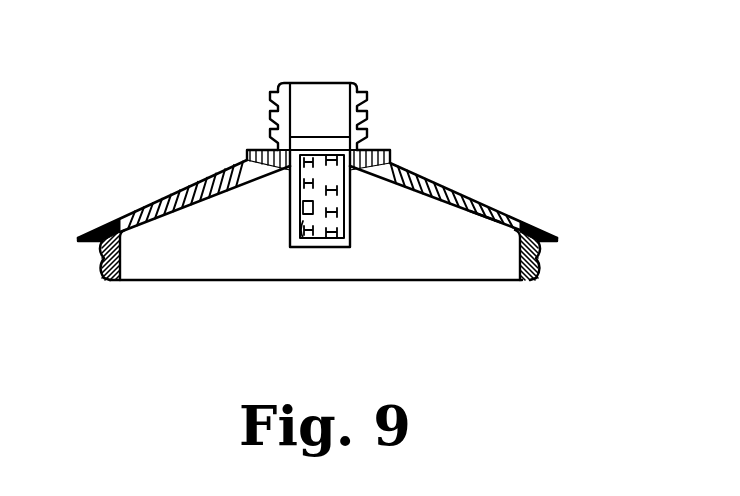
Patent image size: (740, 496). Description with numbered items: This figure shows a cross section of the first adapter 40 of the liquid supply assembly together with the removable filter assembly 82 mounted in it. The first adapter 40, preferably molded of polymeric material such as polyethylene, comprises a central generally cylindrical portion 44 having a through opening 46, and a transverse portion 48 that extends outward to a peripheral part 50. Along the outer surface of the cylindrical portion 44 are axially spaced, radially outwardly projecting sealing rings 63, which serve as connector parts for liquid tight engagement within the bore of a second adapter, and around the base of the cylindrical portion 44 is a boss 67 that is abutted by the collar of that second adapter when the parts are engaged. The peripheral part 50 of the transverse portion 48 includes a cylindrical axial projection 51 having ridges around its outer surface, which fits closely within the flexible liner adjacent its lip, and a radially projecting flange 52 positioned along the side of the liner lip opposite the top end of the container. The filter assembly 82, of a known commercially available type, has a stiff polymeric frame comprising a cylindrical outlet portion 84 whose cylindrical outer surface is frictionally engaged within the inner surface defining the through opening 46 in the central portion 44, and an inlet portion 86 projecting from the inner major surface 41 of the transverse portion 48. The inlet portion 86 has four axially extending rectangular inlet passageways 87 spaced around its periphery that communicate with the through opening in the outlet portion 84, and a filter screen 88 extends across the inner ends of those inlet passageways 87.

The first adapter 40 is at (442, 186).
The inner major surface 41 is at (482, 216).
The central generally cylindrical portion 44 is at (367, 128).
The through opening 46 is at (291, 118).
The transverse portion 48 is at (150, 206).
The peripheral part 50 is at (86, 237).
The cylindrical axial projection 51 is at (534, 277).
The radially projecting flange 52 is at (559, 239).
The sealing rings 63 is at (280, 132).
The boss 67 is at (378, 149).
The removable filter assembly 82 is at (354, 199).
The cylindrical outlet portion 84 is at (312, 146).
The inlet portion 86 is at (291, 196).
The inlet passageways 87 is at (302, 238).
The filter screen 88 is at (313, 243).